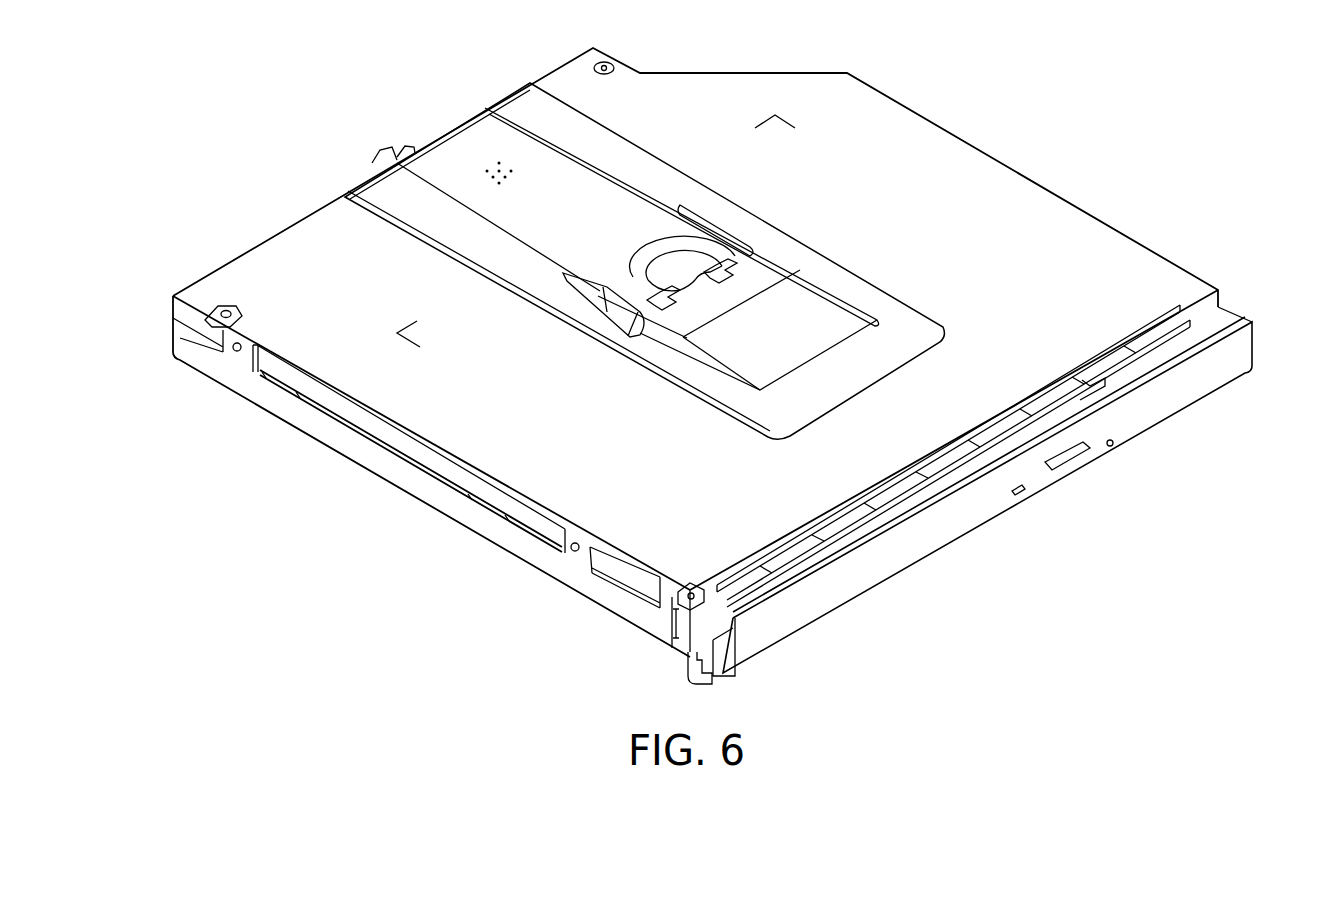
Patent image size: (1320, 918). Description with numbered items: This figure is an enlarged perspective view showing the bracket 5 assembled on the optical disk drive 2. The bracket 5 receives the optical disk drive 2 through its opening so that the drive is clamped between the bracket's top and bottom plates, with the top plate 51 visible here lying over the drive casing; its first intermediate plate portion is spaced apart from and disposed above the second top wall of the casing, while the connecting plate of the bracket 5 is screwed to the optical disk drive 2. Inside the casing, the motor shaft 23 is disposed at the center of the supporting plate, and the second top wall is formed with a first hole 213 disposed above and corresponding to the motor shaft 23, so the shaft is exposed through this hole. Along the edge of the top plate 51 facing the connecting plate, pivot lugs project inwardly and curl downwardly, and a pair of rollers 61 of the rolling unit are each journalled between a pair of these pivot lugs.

The optical disk drive 2 is at (1120, 265).
The bracket 5 is at (522, 102).
The top plate 51 is at (905, 300).
The first hole 213 is at (657, 262).
The motor shaft 23 is at (683, 270).
The rollers 61 is at (722, 262).